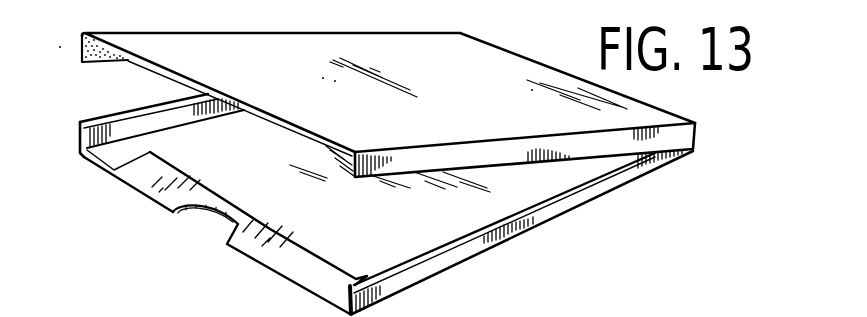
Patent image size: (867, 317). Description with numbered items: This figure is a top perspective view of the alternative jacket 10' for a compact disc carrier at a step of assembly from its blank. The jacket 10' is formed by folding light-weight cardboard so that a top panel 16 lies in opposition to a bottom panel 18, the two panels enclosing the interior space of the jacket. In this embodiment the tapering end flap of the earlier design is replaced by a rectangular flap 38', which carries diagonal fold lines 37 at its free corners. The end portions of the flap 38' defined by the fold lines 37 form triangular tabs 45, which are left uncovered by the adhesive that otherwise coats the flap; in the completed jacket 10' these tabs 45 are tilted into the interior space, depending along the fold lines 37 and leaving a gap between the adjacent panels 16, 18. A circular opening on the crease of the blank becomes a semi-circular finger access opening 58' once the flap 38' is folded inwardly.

The jacket 10' is at (391, 174).
The top panel 16 is at (462, 96).
The bottom panel 18 is at (400, 223).
The diagonal fold lines 37 is at (124, 175).
The flap 38' is at (258, 218).
The triangular tabs 45 is at (137, 158).
The semi-circular finger access opening 58' is at (184, 236).